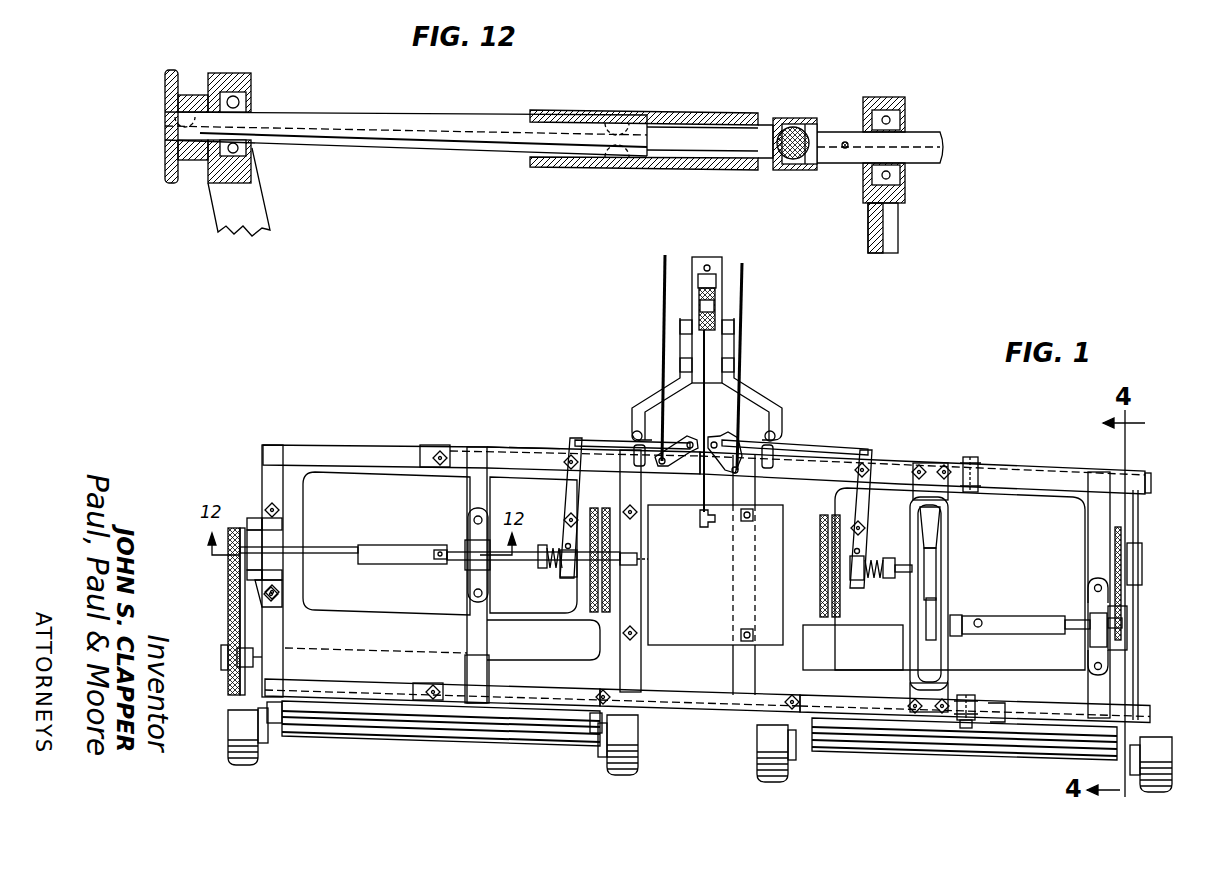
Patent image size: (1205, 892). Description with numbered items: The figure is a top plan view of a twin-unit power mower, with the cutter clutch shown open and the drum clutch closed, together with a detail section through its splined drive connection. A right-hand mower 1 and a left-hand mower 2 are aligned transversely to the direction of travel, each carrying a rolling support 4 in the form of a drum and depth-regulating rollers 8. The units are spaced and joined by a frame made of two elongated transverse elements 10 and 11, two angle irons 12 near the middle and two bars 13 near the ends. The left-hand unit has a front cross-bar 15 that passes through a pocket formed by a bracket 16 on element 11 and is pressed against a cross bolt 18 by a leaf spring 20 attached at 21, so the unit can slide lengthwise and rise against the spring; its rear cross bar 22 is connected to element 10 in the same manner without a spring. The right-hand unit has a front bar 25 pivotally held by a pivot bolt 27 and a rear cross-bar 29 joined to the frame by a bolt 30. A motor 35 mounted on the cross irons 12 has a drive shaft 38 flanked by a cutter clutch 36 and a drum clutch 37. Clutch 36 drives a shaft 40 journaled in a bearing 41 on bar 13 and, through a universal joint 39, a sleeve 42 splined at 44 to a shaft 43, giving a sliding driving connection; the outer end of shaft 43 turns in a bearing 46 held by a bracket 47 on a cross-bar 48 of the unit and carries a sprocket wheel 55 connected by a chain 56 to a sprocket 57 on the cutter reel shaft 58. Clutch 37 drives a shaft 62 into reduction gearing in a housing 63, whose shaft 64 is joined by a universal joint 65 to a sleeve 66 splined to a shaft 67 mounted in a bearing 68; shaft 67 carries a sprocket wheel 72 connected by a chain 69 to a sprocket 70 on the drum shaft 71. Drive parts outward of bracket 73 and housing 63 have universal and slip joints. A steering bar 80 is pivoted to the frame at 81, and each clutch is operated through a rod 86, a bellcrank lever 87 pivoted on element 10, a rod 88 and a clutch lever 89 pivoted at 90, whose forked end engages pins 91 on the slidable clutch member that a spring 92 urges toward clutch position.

In FIG. 1, the right-hand mower 1 is at (412, 740).
In FIG. 1, the left-hand mower 2 is at (928, 757).
In FIG. 1, the rolling support 4 is at (380, 612).
In FIG. 1, the rollers 8 is at (228, 748).
In FIG. 1, the elongated frame element 10 is at (508, 450).
In FIG. 1, the elongated frame element 11 is at (692, 700).
In FIG. 1, the angle iron frame elements 12 is at (628, 676).
In FIG. 1, the bar frame elements 13 is at (930, 465).
In FIG. 1, the cross-bar 15 is at (1043, 715).
In FIG. 1, the bracket 16 is at (975, 700).
In FIG. 1, the bolt 18 is at (966, 728).
In FIG. 1, the leaf spring 20 is at (1000, 722).
In FIG. 1, the spring attachment / rear connection 21 is at (970, 457).
In FIG. 1, the cross bar 22 is at (1053, 475).
In FIG. 1, the front bar 25 is at (340, 688).
In FIG. 1, the pivot bolt 27 is at (437, 698).
In FIG. 1, the cross-bar 29 is at (375, 455).
In FIG. 1, the bolt 30 is at (440, 450).
In FIG. 1, the engine or motor 35 is at (715, 575).
In FIG. 1, the clutch 36 is at (598, 613).
In FIG. 1, the clutch 37 is at (827, 615).
In FIG. 1, the drive shaft 38 is at (640, 559).
In FIG. 12, the universal joint 39 is at (795, 170).
In FIG. 1, the universal joint 39 is at (440, 549).
In FIG. 12, the shaft 40 is at (930, 130).
In FIG. 1, the shaft 40 is at (528, 561).
In FIG. 12, the bearing 41 is at (885, 97).
In FIG. 1, the bearing 41 is at (466, 565).
In FIG. 12, the sleeve 42 is at (668, 160).
In FIG. 1, the sleeve 42 is at (395, 545).
In FIG. 12, the shaft 43 is at (398, 152).
In FIG. 1, the shaft 43 is at (330, 547).
In FIG. 12, the splines 44 is at (618, 121).
In FIG. 12, the bearing 46 is at (236, 73).
In FIG. 1, the bearing 46 is at (252, 518).
In FIG. 12, the bracket 47 is at (256, 206).
In FIG. 1, the bracket 47 is at (280, 525).
In FIG. 1, the cross-bar 48 is at (262, 462).
In FIG. 12, the sprocket wheel 55 is at (168, 160).
In FIG. 1, the sprocket wheel 55 is at (236, 555).
In FIG. 1, the chain 56 is at (228, 575).
In FIG. 1, the sprocket 57 is at (221, 657).
In FIG. 1, the shaft of the cutter reel 58 is at (258, 657).
In FIG. 1, the shaft 62 is at (903, 578).
In FIG. 1, the housing 63 is at (937, 612).
In FIG. 1, the shaft 64 is at (955, 626).
In FIG. 1, the universal joint 65 is at (982, 620).
In FIG. 1, the sleeve 66 is at (1023, 631).
In FIG. 1, the shaft 67 is at (1068, 620).
In FIG. 1, the bearing 68 is at (1097, 633).
In FIG. 1, the chain 69 is at (1110, 607).
In FIG. 1, the sprocket 70 is at (1122, 536).
In FIG. 1, the shaft of the drum 71 is at (1143, 565).
In FIG. 1, the sprocket wheel 72 is at (1122, 623).
In FIG. 12, the bracket 73 is at (870, 242).
In FIG. 1, the bracket 73 is at (467, 588).
In FIG. 1, the steering bar 80 is at (717, 278).
In FIG. 1, the pivotal connection 81 is at (628, 433).
In FIG. 1, the rod 86 is at (663, 292).
In FIG. 1, the bellcrank lever 87 is at (708, 350).
In FIG. 1, the rod 88 is at (594, 440).
In FIG. 1, the clutch lever 89 is at (574, 488).
In FIG. 1, the pivot 90 is at (564, 520).
In FIG. 1, the pins 91 is at (566, 545).
In FIG. 1, the spring 92 is at (553, 569).